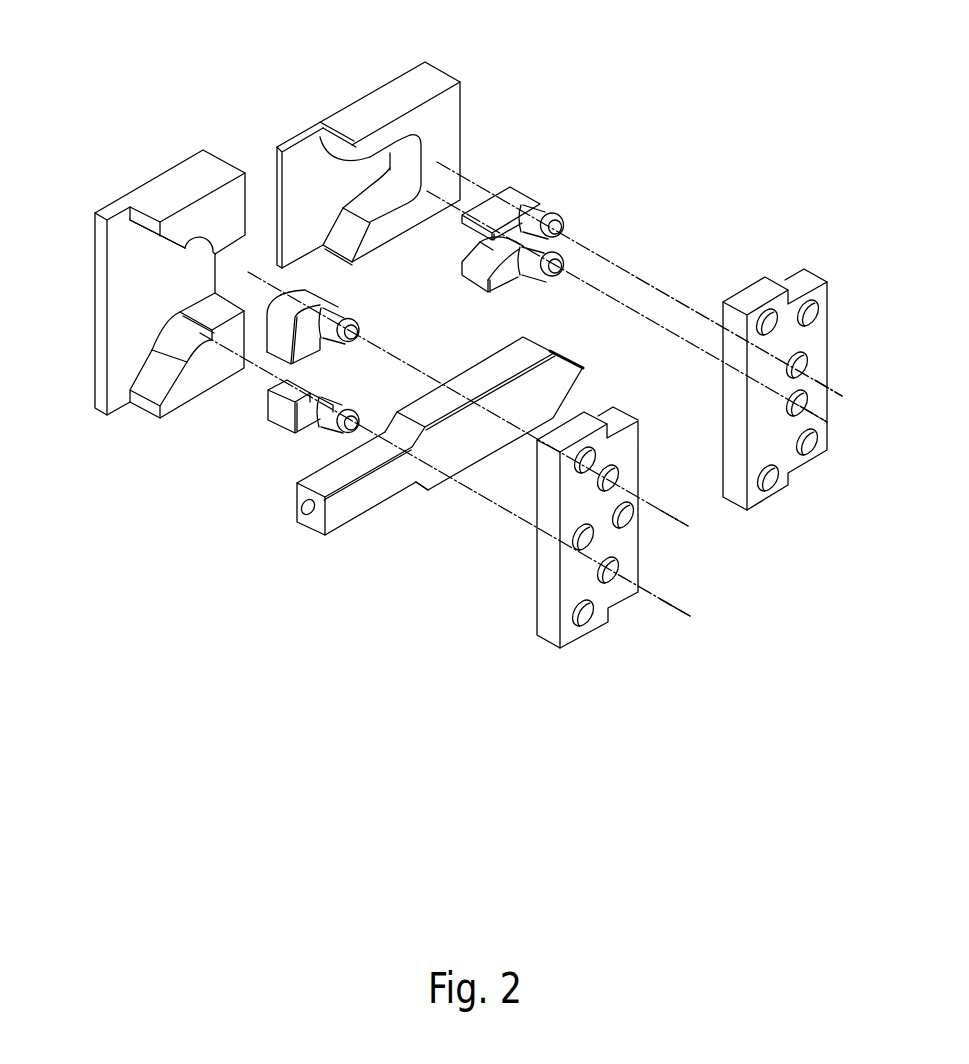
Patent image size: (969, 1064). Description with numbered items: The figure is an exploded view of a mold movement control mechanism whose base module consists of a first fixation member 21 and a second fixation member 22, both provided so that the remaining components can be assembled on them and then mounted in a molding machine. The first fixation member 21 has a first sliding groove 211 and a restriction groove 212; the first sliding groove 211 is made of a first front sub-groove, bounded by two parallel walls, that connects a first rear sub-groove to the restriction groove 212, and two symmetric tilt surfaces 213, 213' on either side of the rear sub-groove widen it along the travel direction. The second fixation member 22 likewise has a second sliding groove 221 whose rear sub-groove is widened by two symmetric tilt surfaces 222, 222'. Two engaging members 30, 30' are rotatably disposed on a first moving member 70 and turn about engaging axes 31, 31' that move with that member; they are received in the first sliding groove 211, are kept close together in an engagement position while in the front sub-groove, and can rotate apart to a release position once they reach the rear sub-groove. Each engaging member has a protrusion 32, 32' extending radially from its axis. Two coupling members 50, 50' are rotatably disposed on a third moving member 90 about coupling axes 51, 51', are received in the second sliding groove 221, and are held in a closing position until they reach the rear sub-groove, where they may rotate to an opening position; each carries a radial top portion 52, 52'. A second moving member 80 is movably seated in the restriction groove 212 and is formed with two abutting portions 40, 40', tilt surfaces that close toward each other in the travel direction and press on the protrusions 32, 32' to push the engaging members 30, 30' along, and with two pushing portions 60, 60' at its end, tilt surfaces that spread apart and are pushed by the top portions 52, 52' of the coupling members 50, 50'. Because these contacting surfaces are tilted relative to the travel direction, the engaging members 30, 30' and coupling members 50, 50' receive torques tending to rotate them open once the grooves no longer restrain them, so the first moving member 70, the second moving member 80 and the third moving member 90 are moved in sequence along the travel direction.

The first fixation member 21 is at (193, 152).
The first sliding groove 211 is at (170, 242).
The restriction groove 212 is at (248, 272).
The tilt surface 213 is at (141, 355).
The tilt surface 213' is at (111, 227).
The second fixation member 22 is at (390, 88).
The second sliding groove 221 is at (428, 161).
The tilt surface 222 is at (316, 150).
The tilt surface 222' is at (330, 110).
The engaging member 30 is at (273, 429).
The engaging member 30' is at (323, 315).
The protrusion 32 is at (276, 413).
The protrusion 32' is at (346, 352).
The abutting portion 40 is at (358, 508).
The abutting portion 40' is at (346, 443).
The coupling member 50 is at (488, 294).
The coupling member 50' is at (529, 185).
The top portion 52 is at (488, 288).
The top portion 52' is at (484, 237).
The pushing portion 60 is at (523, 413).
The pushing portion 60' is at (575, 333).
The second moving member 80 is at (462, 455).
The first moving member 70 is at (558, 583).
The engaging axis 31 is at (667, 638).
The engaging axis 31' is at (677, 480).
The third moving member 90 is at (806, 275).
The coupling axis 51 is at (825, 460).
The coupling axis 51' is at (844, 359).